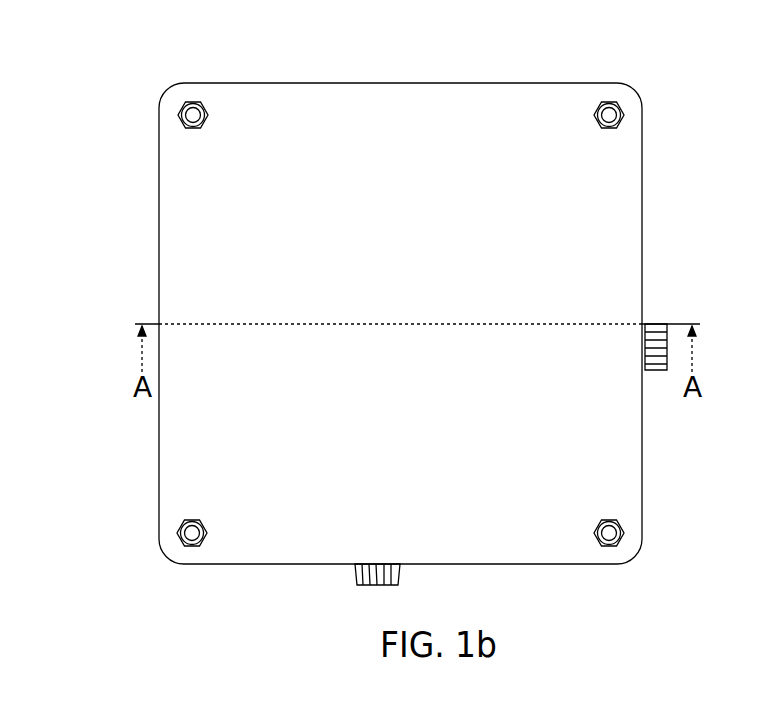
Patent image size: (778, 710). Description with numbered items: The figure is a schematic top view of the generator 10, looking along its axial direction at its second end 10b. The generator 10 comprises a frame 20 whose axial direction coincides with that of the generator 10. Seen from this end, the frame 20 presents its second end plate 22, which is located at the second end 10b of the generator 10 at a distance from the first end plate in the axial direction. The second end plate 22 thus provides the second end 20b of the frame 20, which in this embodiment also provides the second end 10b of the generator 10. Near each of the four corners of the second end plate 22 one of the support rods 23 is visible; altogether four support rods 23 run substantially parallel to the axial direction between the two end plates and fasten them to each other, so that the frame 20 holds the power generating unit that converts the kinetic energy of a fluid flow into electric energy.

The generator 10 is at (204, 47).
The second end of the generator 10b is at (426, 135).
The frame 20 is at (136, 152).
The second end of the frame 20b is at (151, 253).
The second end plate 22 is at (442, 385).
The support rods 23 is at (616, 107).